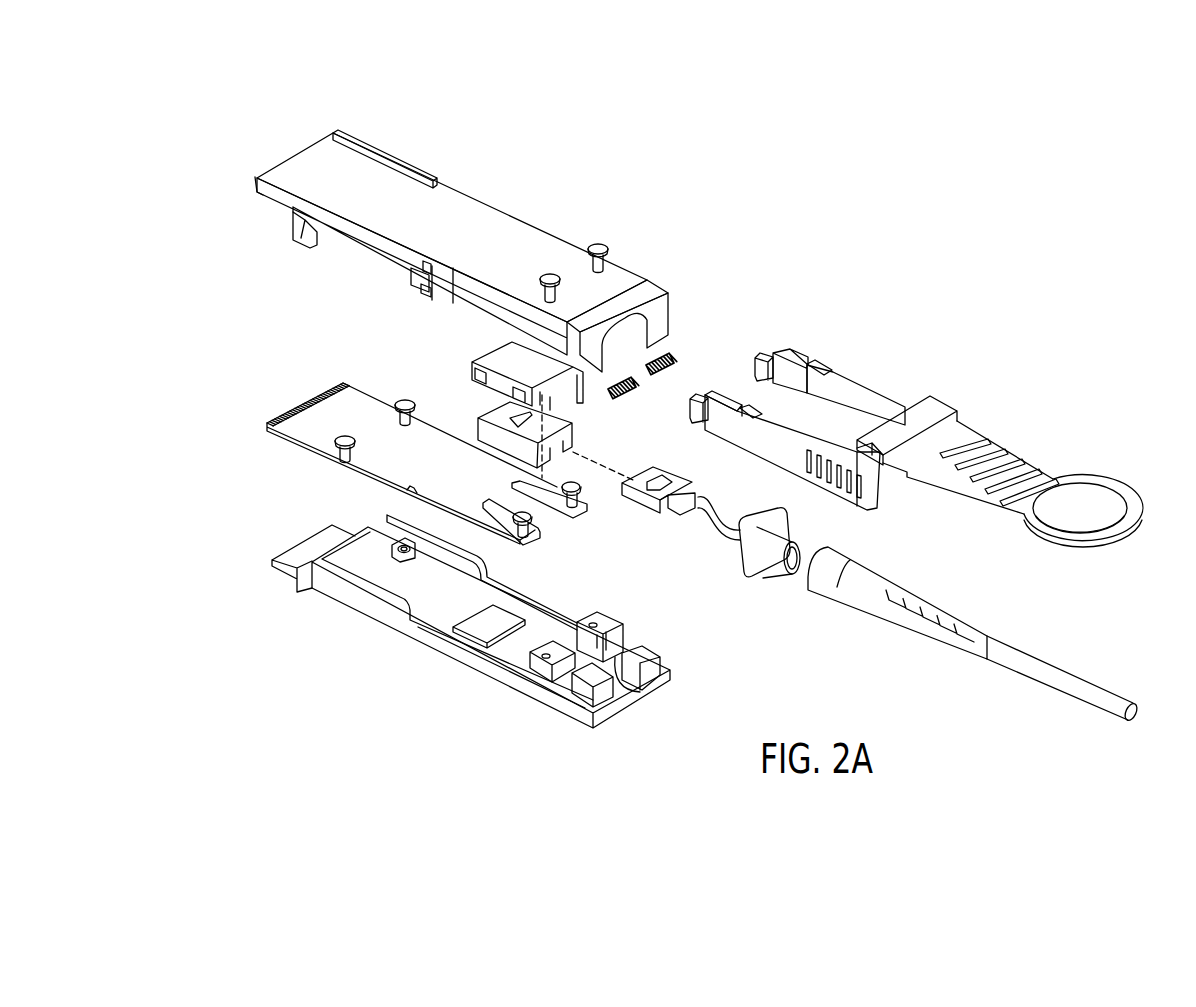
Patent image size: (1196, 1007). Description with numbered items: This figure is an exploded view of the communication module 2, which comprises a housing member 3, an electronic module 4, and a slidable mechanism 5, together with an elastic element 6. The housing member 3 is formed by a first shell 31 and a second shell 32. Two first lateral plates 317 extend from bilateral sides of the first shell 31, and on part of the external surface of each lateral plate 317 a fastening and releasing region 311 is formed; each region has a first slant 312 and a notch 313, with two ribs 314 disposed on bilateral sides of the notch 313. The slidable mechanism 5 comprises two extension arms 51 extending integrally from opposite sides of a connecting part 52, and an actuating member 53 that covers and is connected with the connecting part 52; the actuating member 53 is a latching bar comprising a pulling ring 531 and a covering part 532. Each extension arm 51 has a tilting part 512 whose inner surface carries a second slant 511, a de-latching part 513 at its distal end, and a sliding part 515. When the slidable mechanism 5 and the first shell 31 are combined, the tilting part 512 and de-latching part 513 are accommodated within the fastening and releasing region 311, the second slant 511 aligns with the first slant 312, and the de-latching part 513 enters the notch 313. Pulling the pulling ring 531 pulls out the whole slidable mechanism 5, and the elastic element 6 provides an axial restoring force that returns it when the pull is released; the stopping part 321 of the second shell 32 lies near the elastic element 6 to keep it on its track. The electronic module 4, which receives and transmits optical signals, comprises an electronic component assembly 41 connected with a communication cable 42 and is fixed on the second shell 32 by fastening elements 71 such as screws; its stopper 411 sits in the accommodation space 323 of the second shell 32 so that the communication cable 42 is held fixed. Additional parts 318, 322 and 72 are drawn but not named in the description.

The communication module 2 is at (1072, 183).
The housing member 3 is at (137, 168).
The first shell 31 is at (310, 165).
The fastening and releasing region 311 is at (473, 305).
The first slant 312 is at (443, 290).
The notch 313 is at (420, 293).
The ribs 314 is at (408, 288).
The first lateral plate 317 is at (280, 197).
The tab 318 is at (305, 243).
The second shell 32 is at (302, 552).
The stopping part 321 is at (647, 660).
The front flange of lower housing 322 is at (330, 597).
The accommodation space 323 is at (585, 660).
The electronic module 4 is at (637, 590).
The electronic component assembly 41 is at (722, 565).
The stopper 411 is at (790, 522).
The communication cable 42 is at (848, 596).
The slidable mechanism 5 is at (1066, 439).
The extension arm 51 is at (865, 392).
The second slant 511 is at (720, 397).
The tilting part 512 is at (790, 352).
The de-latching part 513 is at (762, 352).
The sliding part 515 is at (820, 365).
The connecting part 52 is at (872, 453).
The actuating member 53 is at (960, 428).
The pulling ring 531 is at (1100, 530).
The covering part 532 is at (933, 407).
The elastic element 6 is at (620, 385).
The fastening elements 71 is at (337, 450).
The screws 72 is at (600, 248).